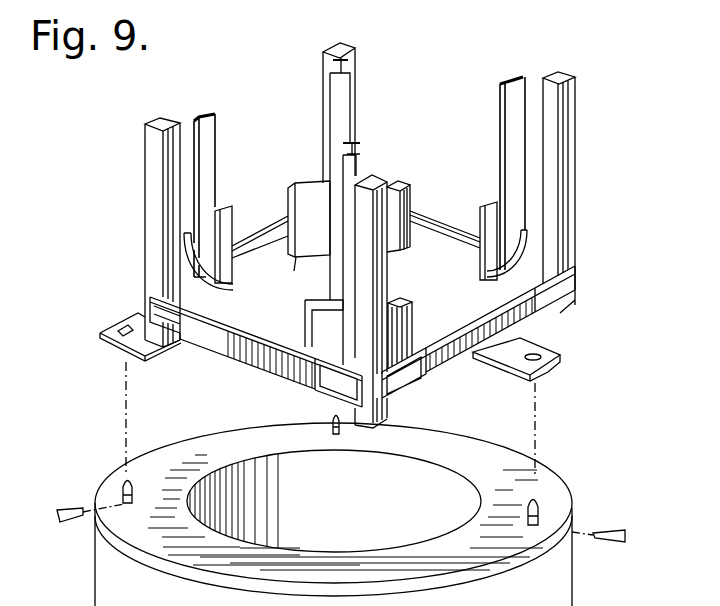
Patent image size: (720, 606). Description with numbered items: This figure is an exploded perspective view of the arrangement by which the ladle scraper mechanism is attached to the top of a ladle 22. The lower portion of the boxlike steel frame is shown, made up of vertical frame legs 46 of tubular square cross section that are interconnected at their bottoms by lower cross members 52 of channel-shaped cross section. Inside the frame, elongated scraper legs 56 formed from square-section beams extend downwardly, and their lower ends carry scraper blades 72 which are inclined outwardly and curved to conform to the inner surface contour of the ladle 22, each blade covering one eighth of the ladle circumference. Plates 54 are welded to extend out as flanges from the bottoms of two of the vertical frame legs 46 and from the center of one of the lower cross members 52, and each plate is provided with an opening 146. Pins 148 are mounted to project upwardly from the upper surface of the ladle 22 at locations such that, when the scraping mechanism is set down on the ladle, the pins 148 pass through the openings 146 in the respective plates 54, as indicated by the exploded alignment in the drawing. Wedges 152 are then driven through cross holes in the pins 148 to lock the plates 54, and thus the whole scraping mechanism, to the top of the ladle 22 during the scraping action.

The ladle 22 is at (190, 440).
The vertical frame legs 46 is at (147, 162).
The lower cross members 52 is at (267, 229).
The feet (plates) 54 is at (100, 333).
The scraper legs 56 is at (217, 162).
The scraper blades 72 is at (225, 212).
The opening 146 is at (127, 321).
The pins 148 is at (330, 417).
The wedges 152 is at (58, 510).